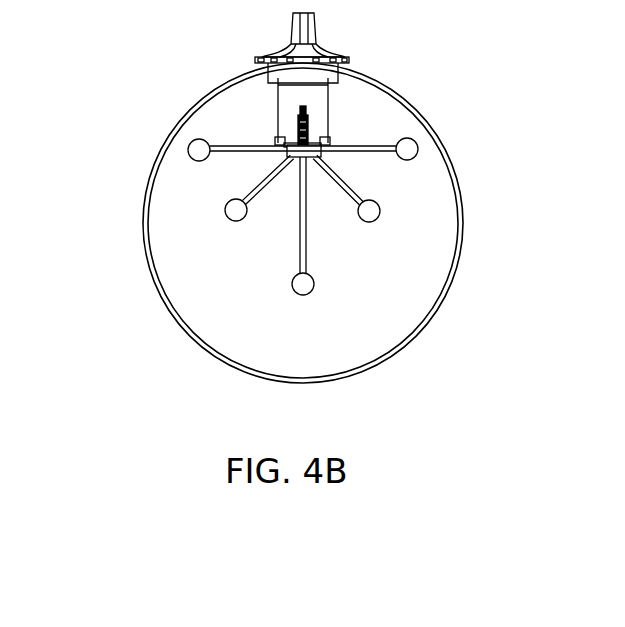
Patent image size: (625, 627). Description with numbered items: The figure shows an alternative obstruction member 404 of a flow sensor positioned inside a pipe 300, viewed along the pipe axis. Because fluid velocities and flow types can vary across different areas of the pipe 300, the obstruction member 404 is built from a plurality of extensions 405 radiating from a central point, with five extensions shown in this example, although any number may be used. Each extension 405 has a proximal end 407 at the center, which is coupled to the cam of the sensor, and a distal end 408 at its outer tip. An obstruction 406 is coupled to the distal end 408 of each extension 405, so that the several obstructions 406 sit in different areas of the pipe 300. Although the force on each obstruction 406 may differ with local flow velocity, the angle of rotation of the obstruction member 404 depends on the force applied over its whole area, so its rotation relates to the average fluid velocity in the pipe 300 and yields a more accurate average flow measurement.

The pipe 300 is at (147, 173).
The obstruction member 404 is at (244, 176).
The extension 405 is at (357, 189).
The obstruction 406 is at (381, 212).
The proximal end 407 is at (295, 170).
The distal end 408 is at (316, 267).